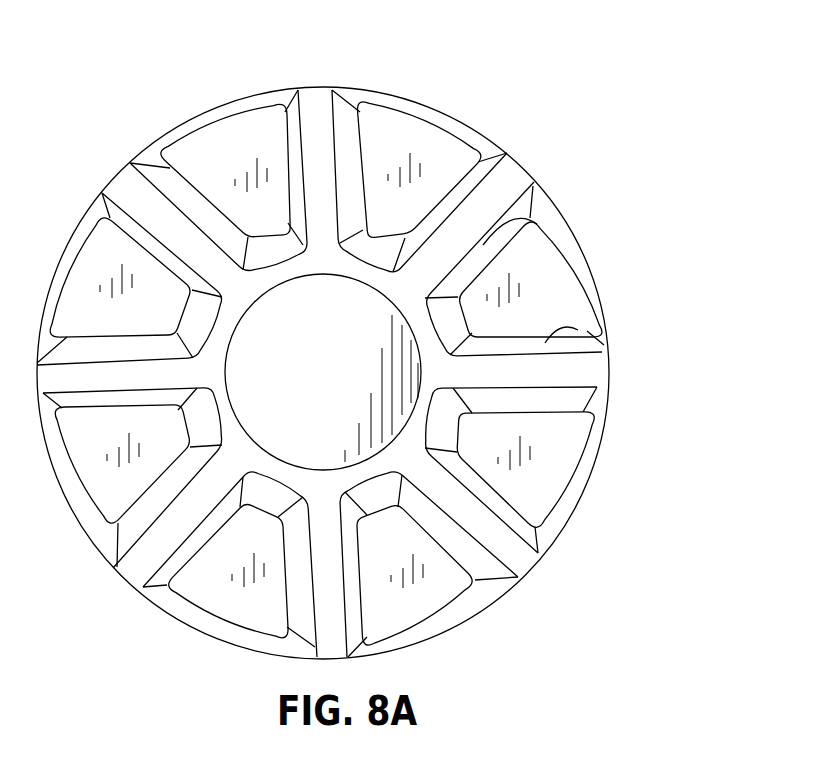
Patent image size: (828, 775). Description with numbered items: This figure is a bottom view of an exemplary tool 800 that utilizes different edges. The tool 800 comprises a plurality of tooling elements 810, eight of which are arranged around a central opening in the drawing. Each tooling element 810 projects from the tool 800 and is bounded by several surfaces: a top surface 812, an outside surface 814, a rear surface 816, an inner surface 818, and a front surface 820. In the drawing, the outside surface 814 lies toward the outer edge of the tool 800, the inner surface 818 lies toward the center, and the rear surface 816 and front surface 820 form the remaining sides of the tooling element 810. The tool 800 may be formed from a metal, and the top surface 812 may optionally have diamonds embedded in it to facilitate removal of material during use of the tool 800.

The tool 800 is at (545, 98).
The tooling element 810 is at (535, 266).
The top surface 812 is at (565, 312).
The outside surface 814 is at (587, 271).
The rear surface 816 is at (537, 224).
The inner surface 818 is at (463, 327).
The front surface 820 is at (596, 334).